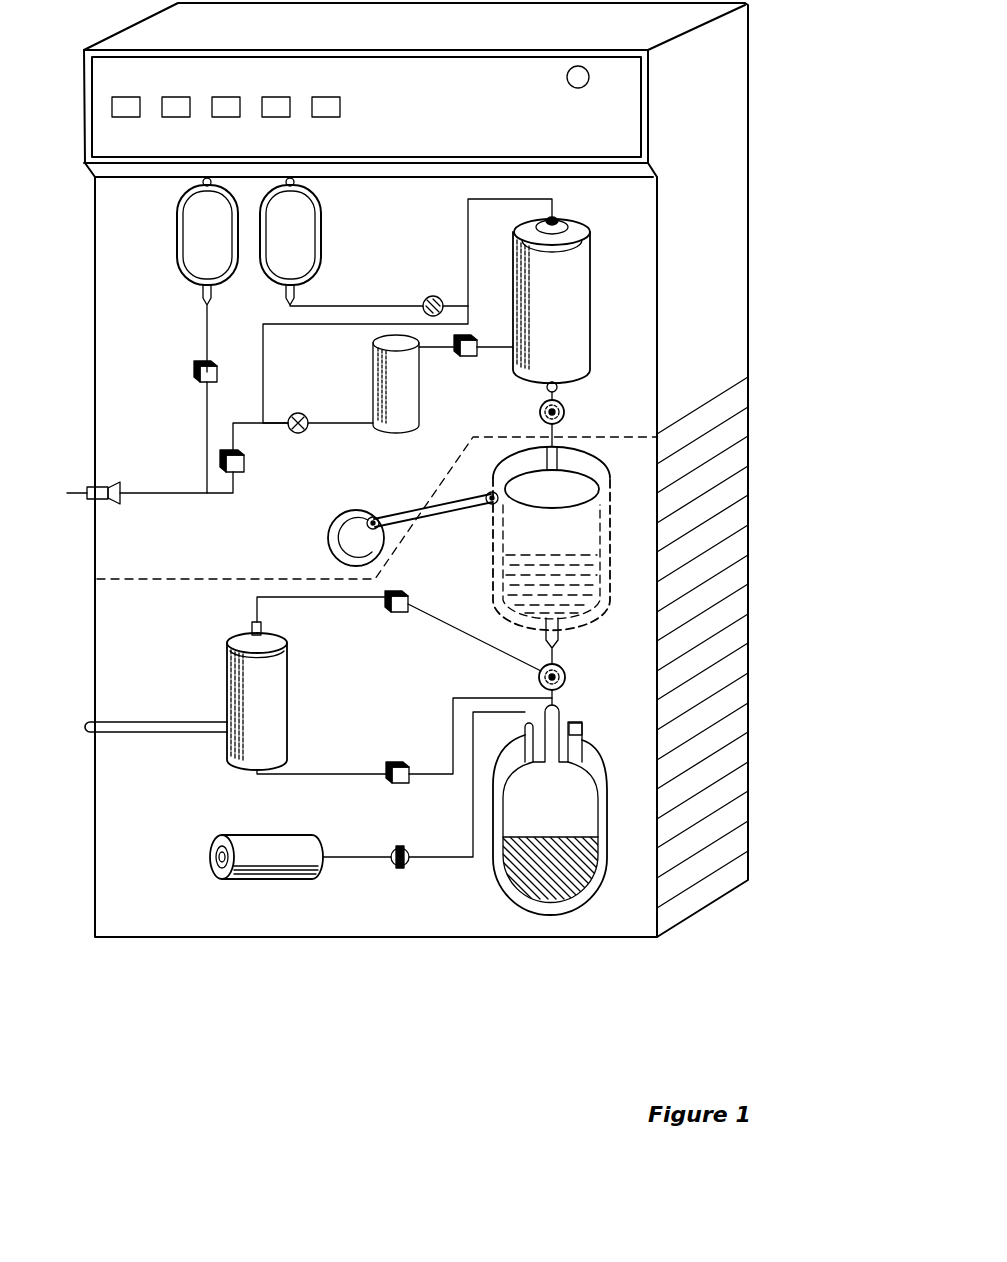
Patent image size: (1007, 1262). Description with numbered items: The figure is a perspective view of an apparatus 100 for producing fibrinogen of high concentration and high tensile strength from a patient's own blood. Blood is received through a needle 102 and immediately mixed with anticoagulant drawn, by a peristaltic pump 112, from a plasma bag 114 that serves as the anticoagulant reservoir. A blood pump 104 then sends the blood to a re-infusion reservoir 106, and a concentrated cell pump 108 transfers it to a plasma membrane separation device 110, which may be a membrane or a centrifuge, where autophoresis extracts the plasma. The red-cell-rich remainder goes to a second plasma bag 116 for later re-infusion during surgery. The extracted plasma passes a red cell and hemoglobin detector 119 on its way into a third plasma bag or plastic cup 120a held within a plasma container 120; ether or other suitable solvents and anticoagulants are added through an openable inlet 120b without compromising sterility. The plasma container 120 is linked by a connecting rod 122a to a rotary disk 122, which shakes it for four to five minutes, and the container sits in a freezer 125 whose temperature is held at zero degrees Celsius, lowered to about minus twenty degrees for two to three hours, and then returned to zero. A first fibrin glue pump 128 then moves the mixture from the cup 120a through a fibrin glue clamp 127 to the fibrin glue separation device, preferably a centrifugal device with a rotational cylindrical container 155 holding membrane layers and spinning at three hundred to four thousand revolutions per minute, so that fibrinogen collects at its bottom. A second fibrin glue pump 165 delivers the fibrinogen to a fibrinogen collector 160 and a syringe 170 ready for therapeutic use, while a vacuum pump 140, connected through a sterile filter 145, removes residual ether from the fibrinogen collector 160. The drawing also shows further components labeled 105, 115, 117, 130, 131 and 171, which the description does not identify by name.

The apparatus 100 is at (625, 110).
The needle 102 is at (78, 494).
The blood pump 104 is at (222, 462).
The check valve 105 is at (302, 433).
The re-infusion reservoir 106 is at (395, 418).
The concentrated cell pump 108 is at (468, 358).
The plasma membrane separation device 110 is at (575, 272).
The peristaltic pump 112 is at (198, 378).
The plasma bag 114 is at (190, 243).
The fluid in vessel 115 is at (600, 595).
The second plasma bag 116 is at (300, 243).
The check valve 117 is at (432, 298).
The red cell and hemoglobin detector 119 is at (557, 385).
The plasma container 120 is at (652, 555).
The third plasma bag or plastic cup 120a is at (600, 548).
The openable inlet 120b is at (563, 410).
The rotary disk 122 is at (330, 532).
The connecting rod 122a is at (425, 510).
The freezer 125 is at (705, 608).
The fibrin glue clamp 127 is at (565, 673).
The first fibrin glue pump 128 is at (400, 615).
The vacuum chamber 130 is at (214, 686).
The tube 131 is at (150, 732).
The vacuum pump 140 is at (273, 880).
The sterile filter 145 is at (403, 868).
The rotational cylindrical container 155 is at (233, 633).
The fibrinogen collector 160 is at (618, 794).
The second fibrin glue pump 165 is at (388, 788).
The syringe 170 is at (578, 728).
The waste fluid 171 is at (552, 868).